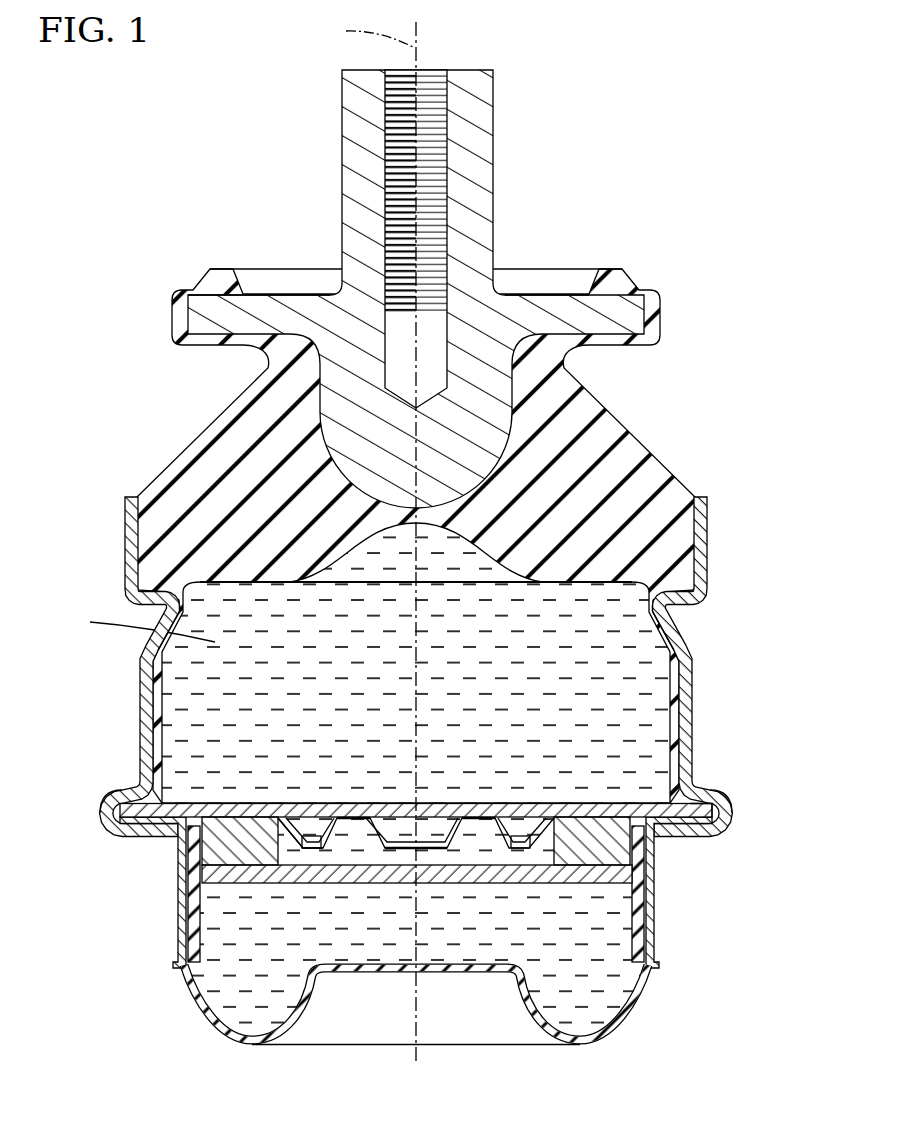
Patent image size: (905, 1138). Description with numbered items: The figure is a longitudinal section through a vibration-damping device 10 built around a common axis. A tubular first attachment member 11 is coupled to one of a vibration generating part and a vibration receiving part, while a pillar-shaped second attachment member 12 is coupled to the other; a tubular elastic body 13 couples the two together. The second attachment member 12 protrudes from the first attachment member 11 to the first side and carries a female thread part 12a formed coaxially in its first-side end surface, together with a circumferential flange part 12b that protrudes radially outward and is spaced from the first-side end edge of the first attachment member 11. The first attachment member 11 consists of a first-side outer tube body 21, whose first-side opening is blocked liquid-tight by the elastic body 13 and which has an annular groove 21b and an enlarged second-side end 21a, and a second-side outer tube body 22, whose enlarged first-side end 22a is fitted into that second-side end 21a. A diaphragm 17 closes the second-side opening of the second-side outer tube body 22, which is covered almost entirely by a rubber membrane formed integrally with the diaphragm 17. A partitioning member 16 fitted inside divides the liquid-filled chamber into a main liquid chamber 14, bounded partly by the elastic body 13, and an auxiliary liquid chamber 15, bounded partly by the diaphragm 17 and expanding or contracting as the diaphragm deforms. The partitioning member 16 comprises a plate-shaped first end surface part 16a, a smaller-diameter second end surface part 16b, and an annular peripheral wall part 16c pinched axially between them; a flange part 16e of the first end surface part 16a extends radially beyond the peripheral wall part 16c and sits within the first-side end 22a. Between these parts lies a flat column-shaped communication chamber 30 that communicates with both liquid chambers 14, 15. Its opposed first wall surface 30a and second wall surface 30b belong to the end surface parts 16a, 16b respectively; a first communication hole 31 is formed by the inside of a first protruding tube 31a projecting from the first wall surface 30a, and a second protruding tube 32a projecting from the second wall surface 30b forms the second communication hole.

The vibration-damping device 10 is at (709, 118).
The first attachment member 11 is at (741, 790).
The second attachment member 12 is at (495, 135).
The female thread part 12a is at (427, 83).
The flange part 12b is at (538, 296).
The elastic body 13 is at (628, 452).
The main liquid chamber 14 is at (618, 690).
The auxiliary liquid chamber 15 is at (593, 985).
The partitioning member 16 is at (428, 905).
The first end surface part 16a is at (623, 810).
The second end surface part 16b is at (625, 875).
The peripheral wall part 16c is at (620, 845).
The flange part 16e is at (697, 803).
The diaphragm 17 is at (625, 1000).
The first-side outer tube body 21 is at (709, 545).
The second-side end 21a is at (100, 813).
The annular groove 21b is at (684, 622).
The second-side outer tube body 22 is at (666, 938).
The first-side end 22a is at (725, 808).
The communication chamber 30 is at (277, 853).
The first wall surface 30a is at (277, 847).
The second wall surface 30b is at (281, 859).
The first communication hole 31 is at (337, 814).
The first protruding tube 31a is at (304, 811).
The second protruding tube 32a is at (475, 858).